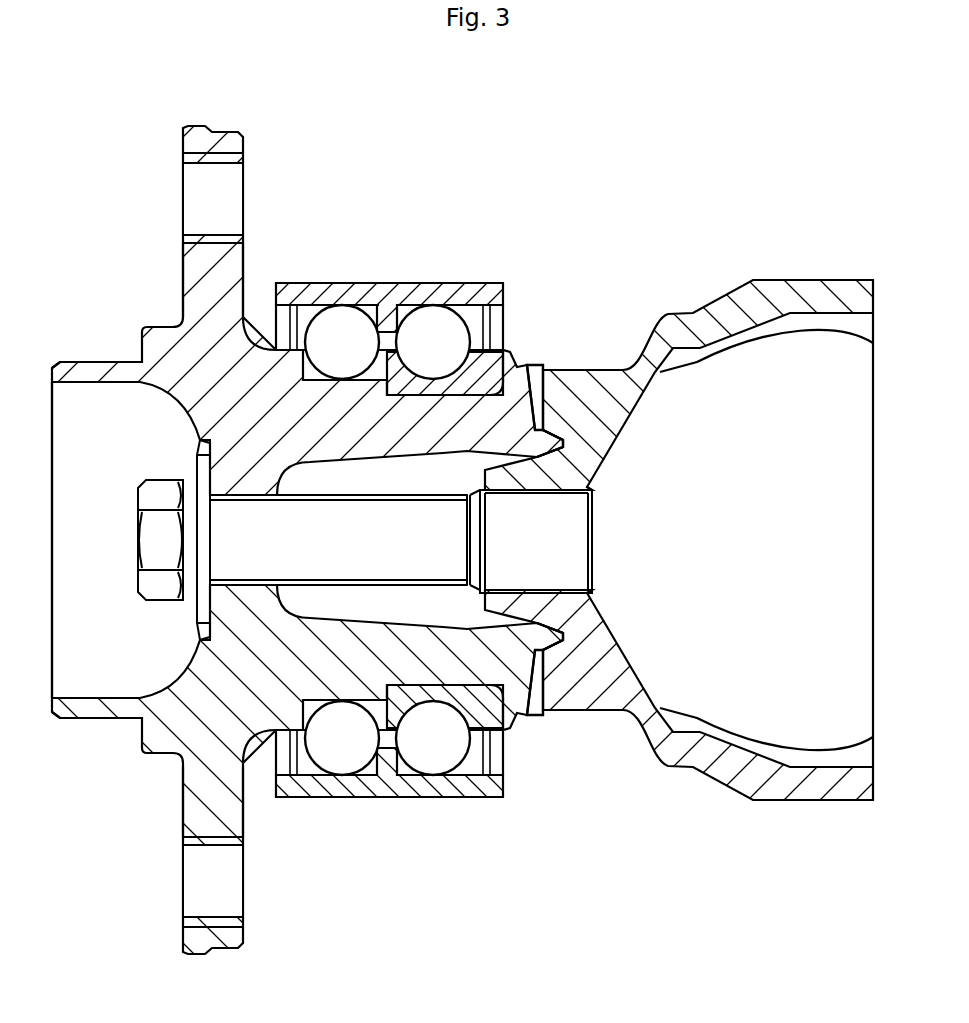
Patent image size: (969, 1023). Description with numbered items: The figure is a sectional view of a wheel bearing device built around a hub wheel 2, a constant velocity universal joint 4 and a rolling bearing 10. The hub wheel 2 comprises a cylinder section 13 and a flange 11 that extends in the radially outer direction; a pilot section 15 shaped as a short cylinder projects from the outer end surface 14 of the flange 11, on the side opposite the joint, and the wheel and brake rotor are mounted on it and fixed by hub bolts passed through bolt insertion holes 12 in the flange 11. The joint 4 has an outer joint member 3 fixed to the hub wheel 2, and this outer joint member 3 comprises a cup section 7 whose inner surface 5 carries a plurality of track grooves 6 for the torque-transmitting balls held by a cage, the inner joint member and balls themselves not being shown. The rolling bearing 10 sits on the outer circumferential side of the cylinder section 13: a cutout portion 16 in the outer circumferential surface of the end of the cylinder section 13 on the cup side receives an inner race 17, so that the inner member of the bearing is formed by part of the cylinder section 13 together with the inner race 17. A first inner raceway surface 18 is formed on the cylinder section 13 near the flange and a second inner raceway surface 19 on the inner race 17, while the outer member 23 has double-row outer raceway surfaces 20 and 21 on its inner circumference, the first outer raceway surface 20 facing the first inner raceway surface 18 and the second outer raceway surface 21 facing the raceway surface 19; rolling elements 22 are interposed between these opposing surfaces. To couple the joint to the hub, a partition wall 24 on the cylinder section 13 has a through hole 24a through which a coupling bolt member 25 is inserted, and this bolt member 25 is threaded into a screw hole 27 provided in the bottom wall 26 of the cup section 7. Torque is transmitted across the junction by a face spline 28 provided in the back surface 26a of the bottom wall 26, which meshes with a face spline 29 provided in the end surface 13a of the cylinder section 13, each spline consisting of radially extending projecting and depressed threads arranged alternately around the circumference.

The hub wheel 2 is at (374, 540).
The outer joint member 3 is at (779, 280).
The constant velocity universal joint 4 is at (676, 523).
The inner surface 5 is at (800, 338).
The track grooves 6 is at (805, 750).
The cup section 7 is at (793, 802).
The rolling bearing 10 is at (411, 538).
The flange 11 is at (190, 268).
The bolt insertion holes 12 is at (240, 176).
The cylinder section 13 is at (374, 540).
The end surface 13a is at (545, 392).
The outer end surface 14 is at (180, 810).
The pilot section 15 is at (103, 720).
The cutout portion 16 is at (476, 395).
The inner race 17 is at (495, 712).
The first inner raceway surface 18 is at (328, 360).
The second inner raceway surface 19 is at (447, 365).
The first outer raceway surface 20 is at (345, 778).
The second outer raceway surface 21 is at (452, 750).
The rolling elements 22 is at (410, 325).
The outer member 23 is at (485, 800).
The partition wall 24 is at (220, 602).
The through hole 24a is at (240, 583).
The coupling bolt member 25 is at (148, 529).
The bottom wall 26 is at (676, 540).
The back surface 26a is at (528, 400).
The screw hole 27 is at (555, 590).
The face spline 28 is at (533, 377).
The face spline 29 is at (548, 385).